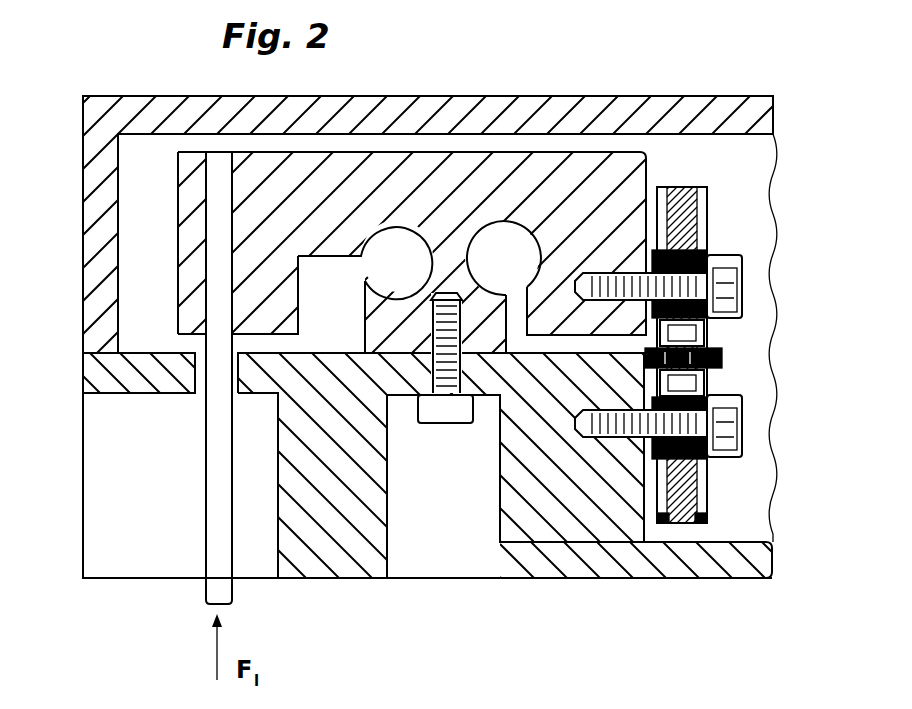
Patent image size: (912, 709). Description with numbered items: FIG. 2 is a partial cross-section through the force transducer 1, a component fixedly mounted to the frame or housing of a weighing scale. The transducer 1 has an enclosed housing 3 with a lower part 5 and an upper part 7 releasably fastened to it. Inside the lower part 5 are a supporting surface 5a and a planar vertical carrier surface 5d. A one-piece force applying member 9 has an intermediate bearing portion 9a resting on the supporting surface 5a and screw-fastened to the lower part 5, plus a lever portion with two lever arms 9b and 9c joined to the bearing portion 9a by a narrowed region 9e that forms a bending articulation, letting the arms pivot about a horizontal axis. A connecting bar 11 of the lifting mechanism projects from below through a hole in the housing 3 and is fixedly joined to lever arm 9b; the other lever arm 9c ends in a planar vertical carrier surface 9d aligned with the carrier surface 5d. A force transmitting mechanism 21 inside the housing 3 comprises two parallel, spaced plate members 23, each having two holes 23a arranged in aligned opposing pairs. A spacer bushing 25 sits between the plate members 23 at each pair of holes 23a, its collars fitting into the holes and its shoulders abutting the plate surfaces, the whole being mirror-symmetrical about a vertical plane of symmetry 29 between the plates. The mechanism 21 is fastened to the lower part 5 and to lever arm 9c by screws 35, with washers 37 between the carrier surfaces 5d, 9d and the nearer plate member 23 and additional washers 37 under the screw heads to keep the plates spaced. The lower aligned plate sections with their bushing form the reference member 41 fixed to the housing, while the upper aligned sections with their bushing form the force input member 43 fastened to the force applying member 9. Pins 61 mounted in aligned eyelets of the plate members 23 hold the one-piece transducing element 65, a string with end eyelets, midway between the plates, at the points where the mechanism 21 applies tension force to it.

The force transducer 1 is at (75, 159).
The housing 3 is at (75, 217).
The lower part 5 is at (75, 381).
The supporting surface 5a is at (168, 350).
The planar vertical carrier surface 5d is at (672, 545).
The upper part 7 is at (82, 273).
The force applying member 9 is at (472, 152).
The intermediate bearing portion 9a is at (356, 310).
The lever arm 9b is at (176, 224).
The lever arm 9c is at (597, 152).
The planar vertical carrier surface 9d is at (658, 163).
The narrowed region 9e is at (449, 250).
The connecting bar 11 is at (218, 496).
The force transmitting mechanism 21 is at (709, 185).
The plate member 23 is at (696, 187).
The hole 23a is at (743, 272).
The spacer bushing 25 is at (692, 520).
The vertical plane of symmetry 29 is at (723, 358).
The screw 35 is at (741, 255).
The washer 37 is at (708, 470).
The reference member 41 is at (710, 519).
The force input member 43 is at (714, 207).
The pin 61 is at (722, 372).
The transducing element 65 is at (708, 336).